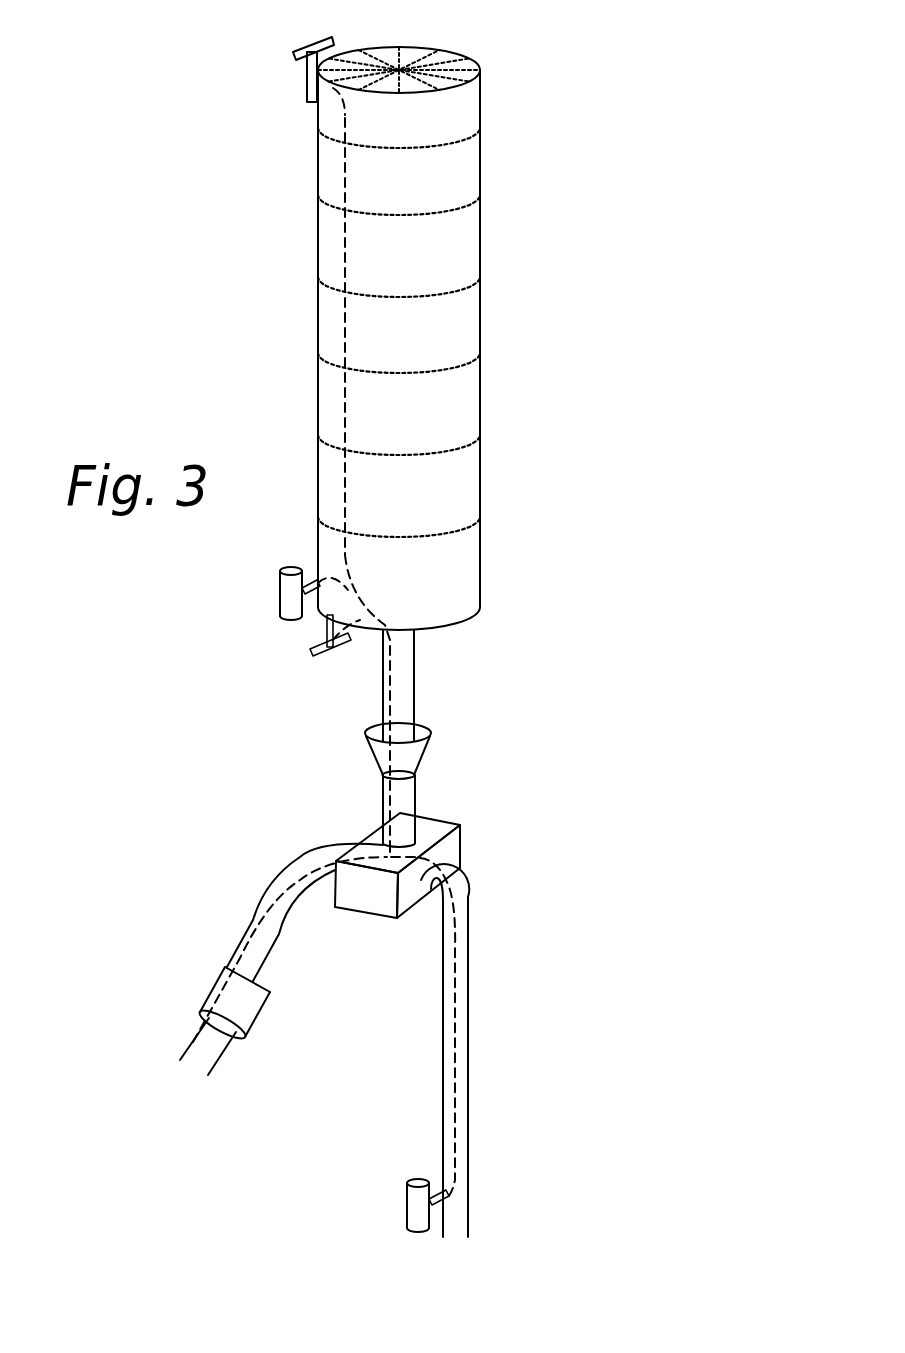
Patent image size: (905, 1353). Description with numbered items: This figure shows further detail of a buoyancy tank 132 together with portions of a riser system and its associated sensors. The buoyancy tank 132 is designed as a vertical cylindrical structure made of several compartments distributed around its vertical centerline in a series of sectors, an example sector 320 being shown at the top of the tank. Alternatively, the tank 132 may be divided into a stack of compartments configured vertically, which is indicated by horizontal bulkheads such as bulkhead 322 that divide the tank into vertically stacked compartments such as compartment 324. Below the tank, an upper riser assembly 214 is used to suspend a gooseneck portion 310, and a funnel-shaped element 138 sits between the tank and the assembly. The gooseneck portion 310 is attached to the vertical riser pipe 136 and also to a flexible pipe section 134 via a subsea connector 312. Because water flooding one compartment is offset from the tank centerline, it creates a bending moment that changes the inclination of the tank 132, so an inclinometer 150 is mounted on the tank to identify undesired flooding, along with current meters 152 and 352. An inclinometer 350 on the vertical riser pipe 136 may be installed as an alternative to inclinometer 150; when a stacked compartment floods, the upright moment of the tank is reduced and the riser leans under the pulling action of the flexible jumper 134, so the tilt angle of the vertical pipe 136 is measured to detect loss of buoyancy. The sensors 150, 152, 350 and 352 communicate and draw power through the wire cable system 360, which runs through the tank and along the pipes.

The buoyancy tank 132 is at (457, 493).
The sector 320 is at (461, 66).
The bulkhead 322 is at (478, 137).
The compartment 324 is at (455, 175).
The wire cable system 360 is at (347, 323).
The current meter 352 is at (292, 52).
The inclinometer 150 is at (280, 590).
The current meter 152 is at (311, 652).
The funnel 138 is at (414, 757).
The upper riser assembly 214 is at (380, 897).
The gooseneck portion 310 is at (303, 863).
The subsea connector 312 is at (220, 983).
The flexible pipe section 134 is at (183, 1040).
The vertical riser pipe 136 is at (464, 1022).
The inclinometer 350 is at (405, 1190).